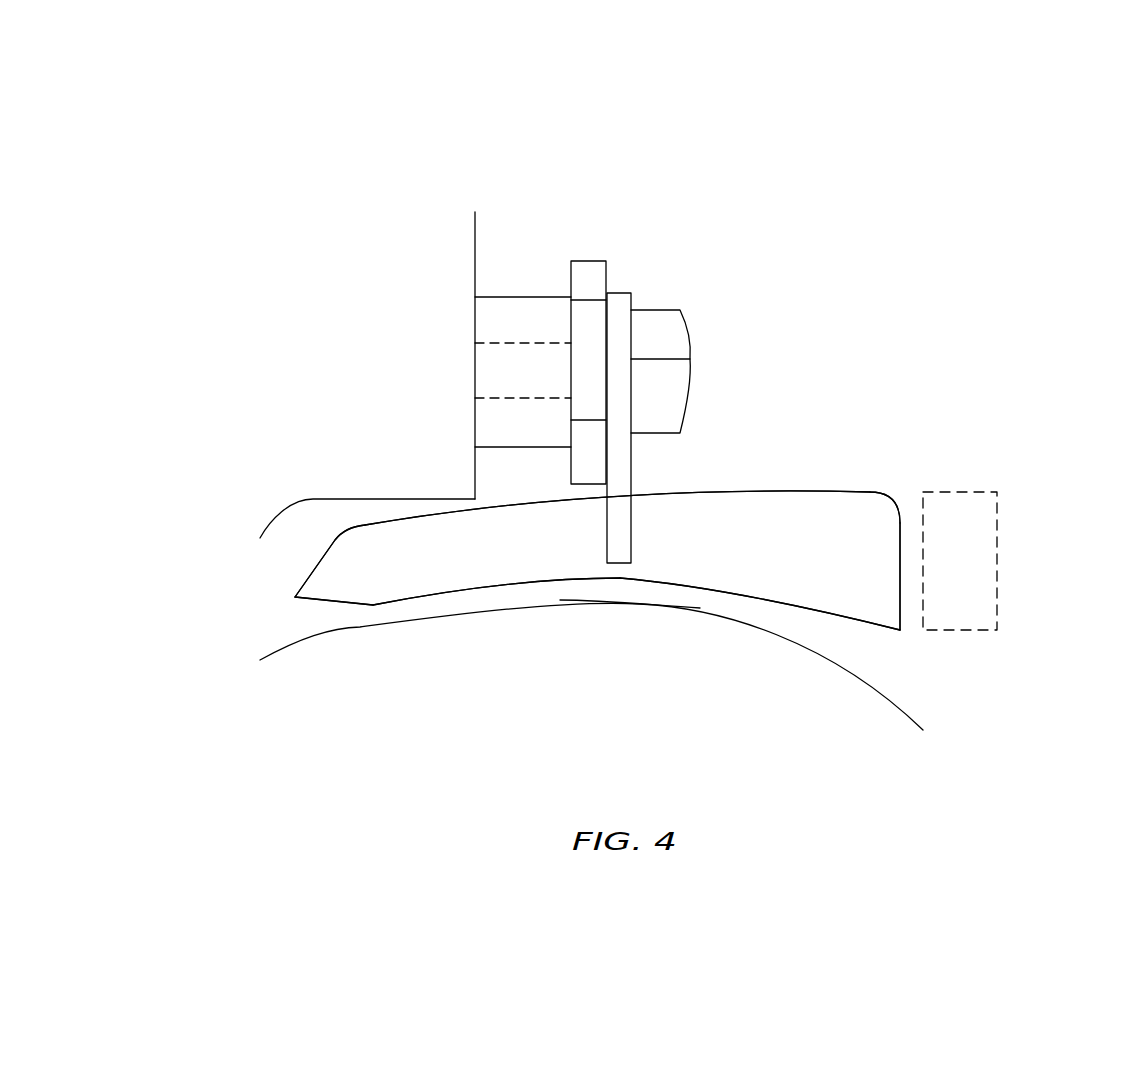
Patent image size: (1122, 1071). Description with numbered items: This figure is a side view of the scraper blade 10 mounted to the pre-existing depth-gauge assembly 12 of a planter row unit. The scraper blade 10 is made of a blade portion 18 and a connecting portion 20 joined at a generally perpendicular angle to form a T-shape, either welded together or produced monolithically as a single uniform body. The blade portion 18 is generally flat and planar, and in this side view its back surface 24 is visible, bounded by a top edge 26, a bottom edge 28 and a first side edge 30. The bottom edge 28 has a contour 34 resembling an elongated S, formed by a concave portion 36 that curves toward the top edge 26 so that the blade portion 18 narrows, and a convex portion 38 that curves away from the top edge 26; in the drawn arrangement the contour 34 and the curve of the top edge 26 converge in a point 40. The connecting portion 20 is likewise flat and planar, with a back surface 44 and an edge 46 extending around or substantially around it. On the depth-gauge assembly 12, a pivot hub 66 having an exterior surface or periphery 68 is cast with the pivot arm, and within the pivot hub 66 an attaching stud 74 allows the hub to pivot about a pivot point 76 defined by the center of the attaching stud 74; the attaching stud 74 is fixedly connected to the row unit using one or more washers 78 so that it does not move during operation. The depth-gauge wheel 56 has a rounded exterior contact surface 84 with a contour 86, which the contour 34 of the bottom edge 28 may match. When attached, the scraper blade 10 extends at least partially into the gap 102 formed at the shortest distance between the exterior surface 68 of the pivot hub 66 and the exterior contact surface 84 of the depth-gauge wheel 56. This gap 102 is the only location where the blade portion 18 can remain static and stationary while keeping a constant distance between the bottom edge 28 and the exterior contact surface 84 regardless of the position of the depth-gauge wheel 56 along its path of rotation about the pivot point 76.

The scraper blade 10 is at (857, 443).
The depth-gauge assembly 12 is at (560, 141).
The blade portion 18 is at (883, 572).
The connecting portion 20 is at (622, 463).
The back surface 24 is at (732, 558).
The top edge 26 is at (760, 492).
The bottom edge 28 is at (783, 600).
The first side edge 30 is at (902, 530).
The contour 34 is at (426, 602).
The concave portion 36 is at (503, 587).
The convex portion 38 is at (318, 600).
The point 40 is at (295, 596).
The back surface 44 is at (607, 492).
The edge 46 is at (623, 305).
The depth-gauge wheel 56 is at (898, 705).
The pivot hub 66 is at (443, 255).
The exterior surface 68 is at (369, 393).
The attaching stud 74 is at (515, 399).
The pivot point 76 is at (690, 373).
The washer 78 is at (513, 297).
The exterior contact surface 84 is at (599, 688).
The contour 86 is at (687, 610).
The gap 102 is at (997, 545).